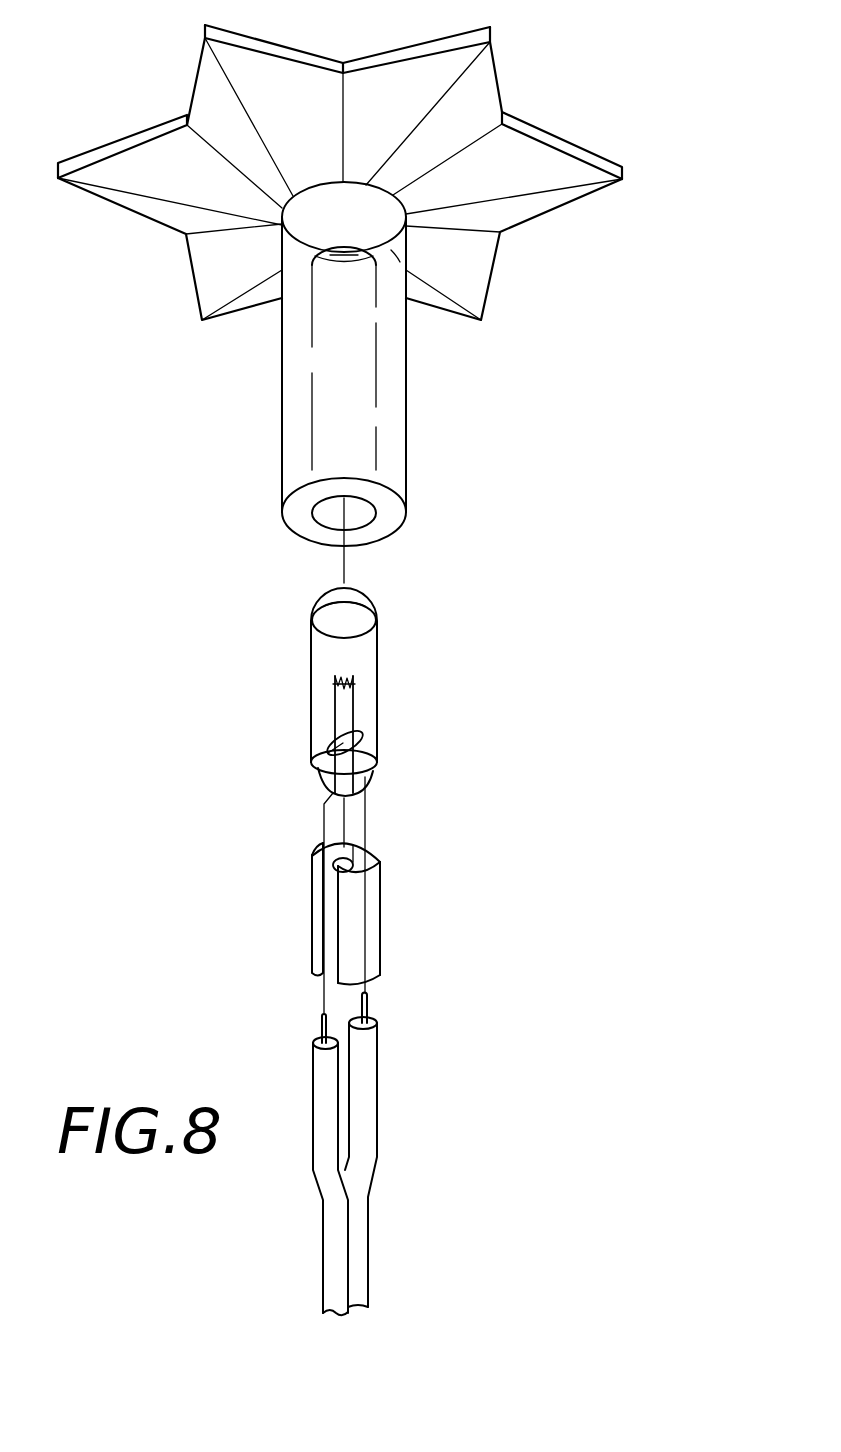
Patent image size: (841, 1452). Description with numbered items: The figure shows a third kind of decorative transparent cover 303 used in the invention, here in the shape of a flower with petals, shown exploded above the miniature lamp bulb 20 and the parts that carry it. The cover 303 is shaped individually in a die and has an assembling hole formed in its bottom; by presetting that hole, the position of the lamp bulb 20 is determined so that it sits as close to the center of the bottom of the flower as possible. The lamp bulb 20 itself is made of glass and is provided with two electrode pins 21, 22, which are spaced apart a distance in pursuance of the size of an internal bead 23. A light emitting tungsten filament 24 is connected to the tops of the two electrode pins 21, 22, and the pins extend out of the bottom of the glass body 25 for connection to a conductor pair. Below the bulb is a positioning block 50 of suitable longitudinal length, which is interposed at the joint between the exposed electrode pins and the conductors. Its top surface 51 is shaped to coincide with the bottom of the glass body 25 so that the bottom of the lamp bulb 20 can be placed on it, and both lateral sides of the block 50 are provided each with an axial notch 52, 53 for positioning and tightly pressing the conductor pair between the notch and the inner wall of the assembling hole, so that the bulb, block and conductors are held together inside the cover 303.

The decorative transparent cover 303 is at (507, 200).
The miniature lamp bulb 20 is at (378, 683).
The electrode pin 21 is at (333, 710).
The electrode pin 22 is at (353, 708).
The internal bead 23 is at (322, 752).
The light emitting tungsten filament 24 is at (343, 676).
The glass body 25 is at (367, 775).
The positioning block 50 is at (380, 922).
The top surface 51 is at (318, 848).
The axial notch 52 is at (318, 925).
The axial notch 53 is at (365, 848).